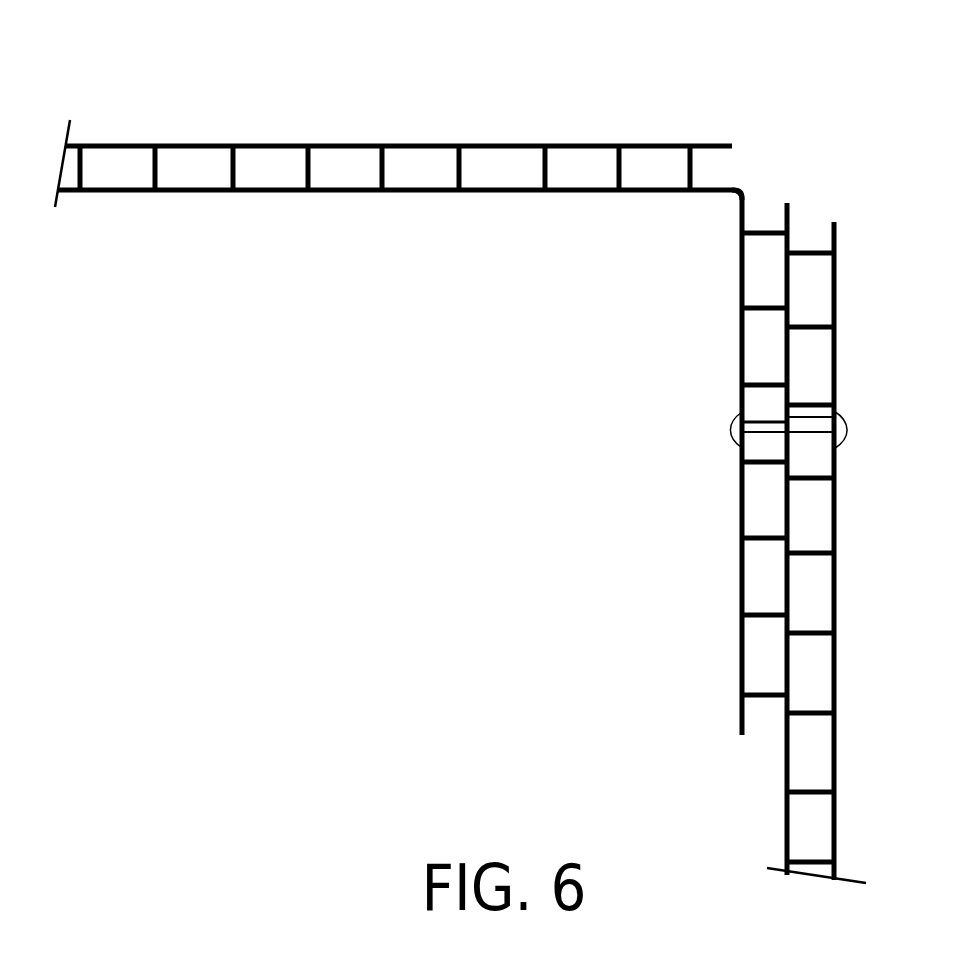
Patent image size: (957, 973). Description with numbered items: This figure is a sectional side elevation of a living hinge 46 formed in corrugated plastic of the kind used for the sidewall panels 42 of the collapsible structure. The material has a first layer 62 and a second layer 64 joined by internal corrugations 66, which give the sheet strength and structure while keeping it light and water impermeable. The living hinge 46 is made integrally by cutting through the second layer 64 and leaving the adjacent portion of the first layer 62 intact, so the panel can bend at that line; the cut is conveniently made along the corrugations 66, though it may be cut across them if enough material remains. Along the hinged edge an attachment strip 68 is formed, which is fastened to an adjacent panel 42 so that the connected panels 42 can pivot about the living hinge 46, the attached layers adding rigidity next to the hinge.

The sidewall panel 42 is at (367, 192).
The living hinge 46 is at (735, 188).
The first layer 62 is at (455, 192).
The second layer 64 is at (512, 146).
The internal corrugations 66 is at (233, 146).
The attachment strip 68 is at (742, 349).